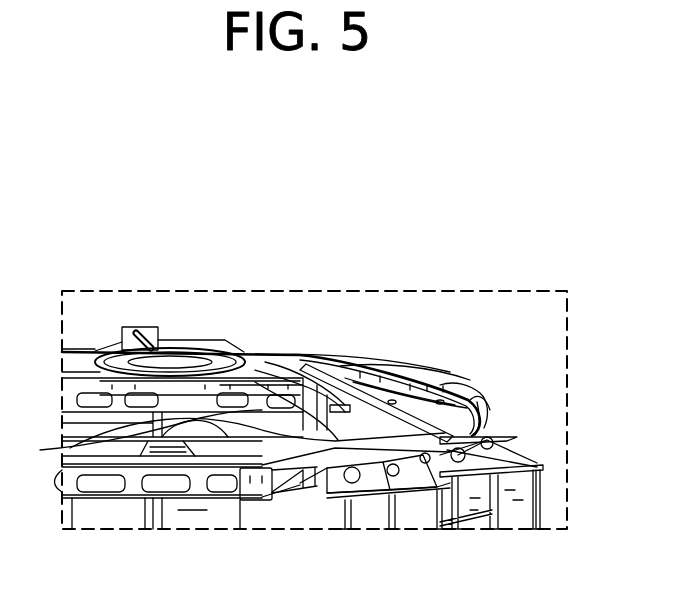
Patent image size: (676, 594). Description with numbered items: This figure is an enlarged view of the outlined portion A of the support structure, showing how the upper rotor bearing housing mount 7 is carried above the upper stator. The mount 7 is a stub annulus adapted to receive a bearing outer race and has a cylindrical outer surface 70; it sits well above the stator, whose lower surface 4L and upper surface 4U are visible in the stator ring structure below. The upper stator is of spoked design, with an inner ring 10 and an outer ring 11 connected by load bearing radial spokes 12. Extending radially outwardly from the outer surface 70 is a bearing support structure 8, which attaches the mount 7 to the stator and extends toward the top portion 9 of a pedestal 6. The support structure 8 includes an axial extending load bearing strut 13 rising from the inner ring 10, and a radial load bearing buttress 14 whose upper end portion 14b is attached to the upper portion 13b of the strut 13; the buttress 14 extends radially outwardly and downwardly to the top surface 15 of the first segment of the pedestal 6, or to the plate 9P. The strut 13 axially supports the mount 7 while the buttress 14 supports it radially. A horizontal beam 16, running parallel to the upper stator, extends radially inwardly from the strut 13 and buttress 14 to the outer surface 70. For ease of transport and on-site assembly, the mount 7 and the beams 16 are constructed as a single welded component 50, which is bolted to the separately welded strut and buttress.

The outlined portion A is at (93, 291).
The lower surface of the upper stator 4L is at (260, 500).
The upper surface of the upper stator 4U is at (226, 431).
The pedestal 6 is at (547, 513).
The bearing housing mount 7 is at (186, 346).
The bearing support structure 8 is at (303, 390).
The top portion of the pedestal 9 is at (520, 498).
The plate 9P is at (490, 405).
The inner ring 10 is at (290, 365).
The outer ring 11 is at (133, 488).
The radial spokes 12 is at (440, 378).
The axial extending load bearing strut 13 is at (338, 375).
The upper portion of the strut 13b is at (314, 393).
The radial load bearing buttress 14 is at (400, 370).
The upper end portion of the buttress 14b is at (370, 352).
The top surface 15 is at (540, 478).
The beam 16 is at (83, 380).
The welded component 50 is at (266, 338).
The cylindrical outer surface 70 is at (188, 385).